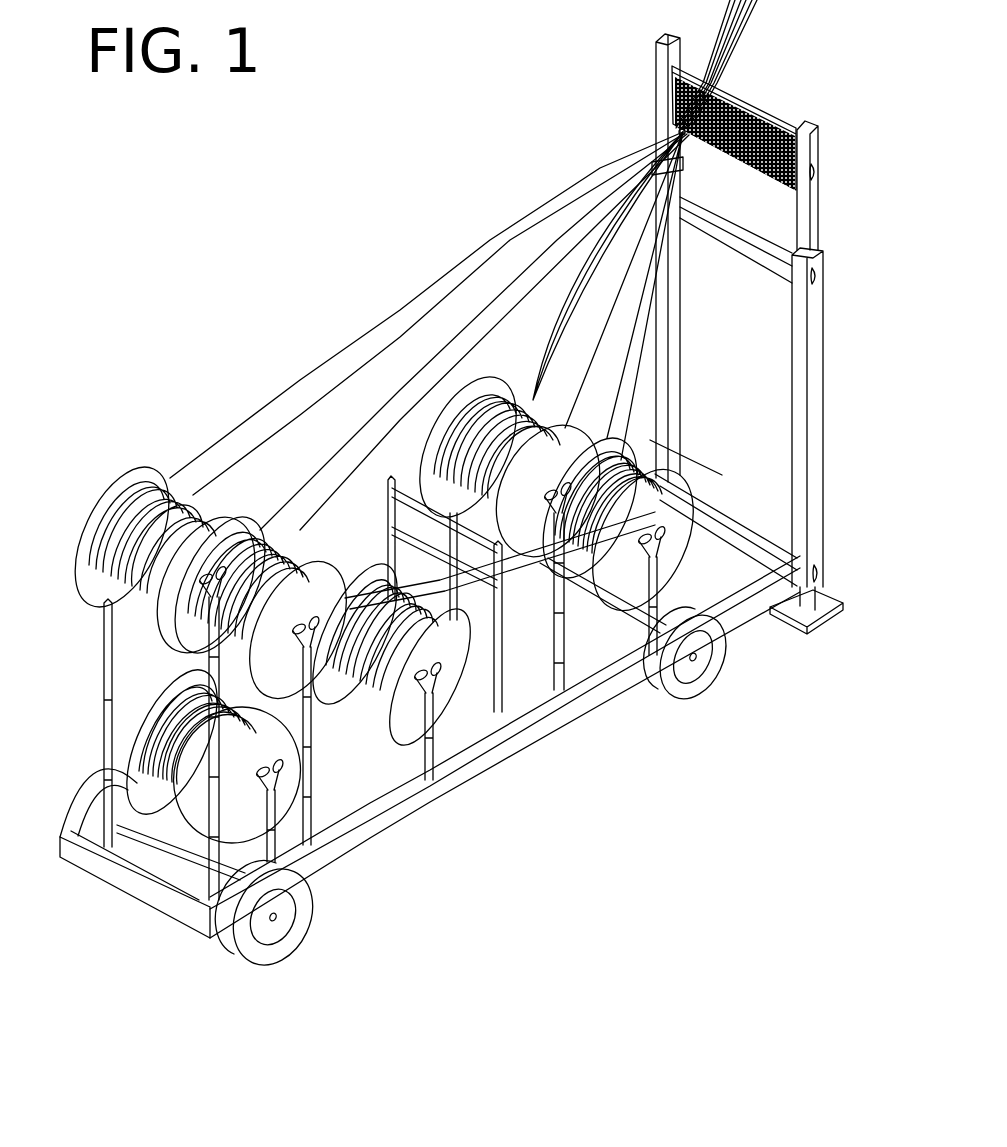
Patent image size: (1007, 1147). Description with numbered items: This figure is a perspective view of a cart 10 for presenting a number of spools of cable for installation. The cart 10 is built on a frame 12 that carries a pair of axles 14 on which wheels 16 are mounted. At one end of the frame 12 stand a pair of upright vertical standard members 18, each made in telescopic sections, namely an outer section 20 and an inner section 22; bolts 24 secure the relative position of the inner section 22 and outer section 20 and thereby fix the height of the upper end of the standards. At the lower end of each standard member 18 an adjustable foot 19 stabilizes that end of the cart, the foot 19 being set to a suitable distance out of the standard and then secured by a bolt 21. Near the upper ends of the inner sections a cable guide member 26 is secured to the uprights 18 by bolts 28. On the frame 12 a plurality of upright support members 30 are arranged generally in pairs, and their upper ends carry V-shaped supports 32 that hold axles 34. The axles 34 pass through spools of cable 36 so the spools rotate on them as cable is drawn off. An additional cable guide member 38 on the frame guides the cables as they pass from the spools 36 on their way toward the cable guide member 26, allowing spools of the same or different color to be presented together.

The cart 10 is at (212, 384).
The frame 12 is at (490, 757).
The axles 14 is at (160, 852).
The wheels 16 is at (308, 920).
The upright vertical standard members 18 is at (675, 322).
The adjustable foot 19 is at (835, 625).
The outer section 20 is at (837, 396).
The bolt 21 is at (822, 568).
The inner section 22 is at (815, 222).
The bolts 24 is at (820, 278).
The cable guide member 26 is at (775, 92).
The bolts 28 is at (818, 172).
The upright support members 30 is at (210, 857).
The V-shaped supports 32 is at (395, 715).
The axles 34 is at (205, 598).
The spools of cable 36 is at (83, 573).
The additional cable guide member 38 is at (392, 527).